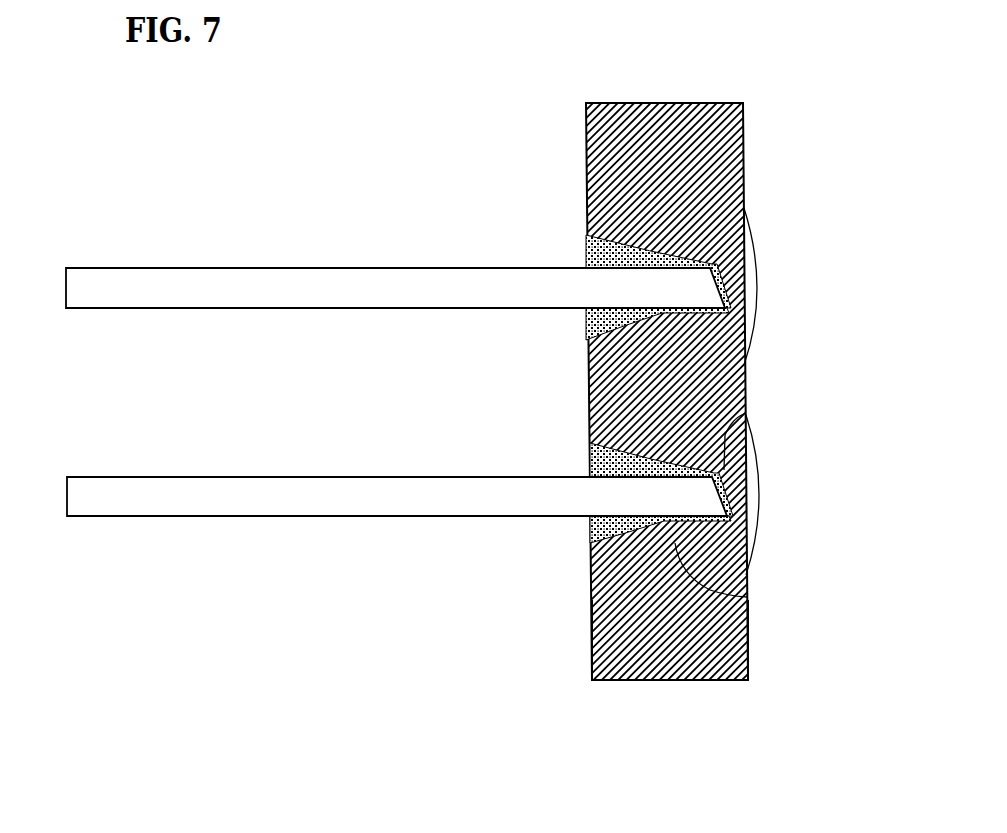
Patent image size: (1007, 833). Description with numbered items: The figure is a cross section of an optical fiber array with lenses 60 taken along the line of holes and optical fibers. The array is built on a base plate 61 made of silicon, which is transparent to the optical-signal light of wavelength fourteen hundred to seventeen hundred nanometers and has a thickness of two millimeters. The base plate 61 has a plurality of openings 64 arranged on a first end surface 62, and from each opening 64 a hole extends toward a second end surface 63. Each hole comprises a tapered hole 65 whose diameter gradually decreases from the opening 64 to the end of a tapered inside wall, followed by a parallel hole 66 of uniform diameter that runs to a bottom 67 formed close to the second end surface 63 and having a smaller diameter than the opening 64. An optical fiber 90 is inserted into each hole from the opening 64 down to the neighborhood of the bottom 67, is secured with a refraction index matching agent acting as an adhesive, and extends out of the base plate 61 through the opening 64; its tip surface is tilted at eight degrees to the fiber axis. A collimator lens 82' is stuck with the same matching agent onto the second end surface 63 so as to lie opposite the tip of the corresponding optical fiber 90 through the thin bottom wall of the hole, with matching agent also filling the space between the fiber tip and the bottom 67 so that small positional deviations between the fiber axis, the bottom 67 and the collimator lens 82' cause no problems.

The optical fiber array with lenses 60 is at (421, 140).
The base plate 61 is at (660, 635).
The first end surface 62 is at (592, 634).
The second end surface 63 is at (748, 665).
The opening 64 is at (590, 457).
The tapered hole 65 is at (592, 528).
The parallel hole 66 is at (747, 597).
The bottom 67 is at (747, 410).
The collimator lens 82' is at (801, 286).
The optical fiber 90 is at (219, 290).